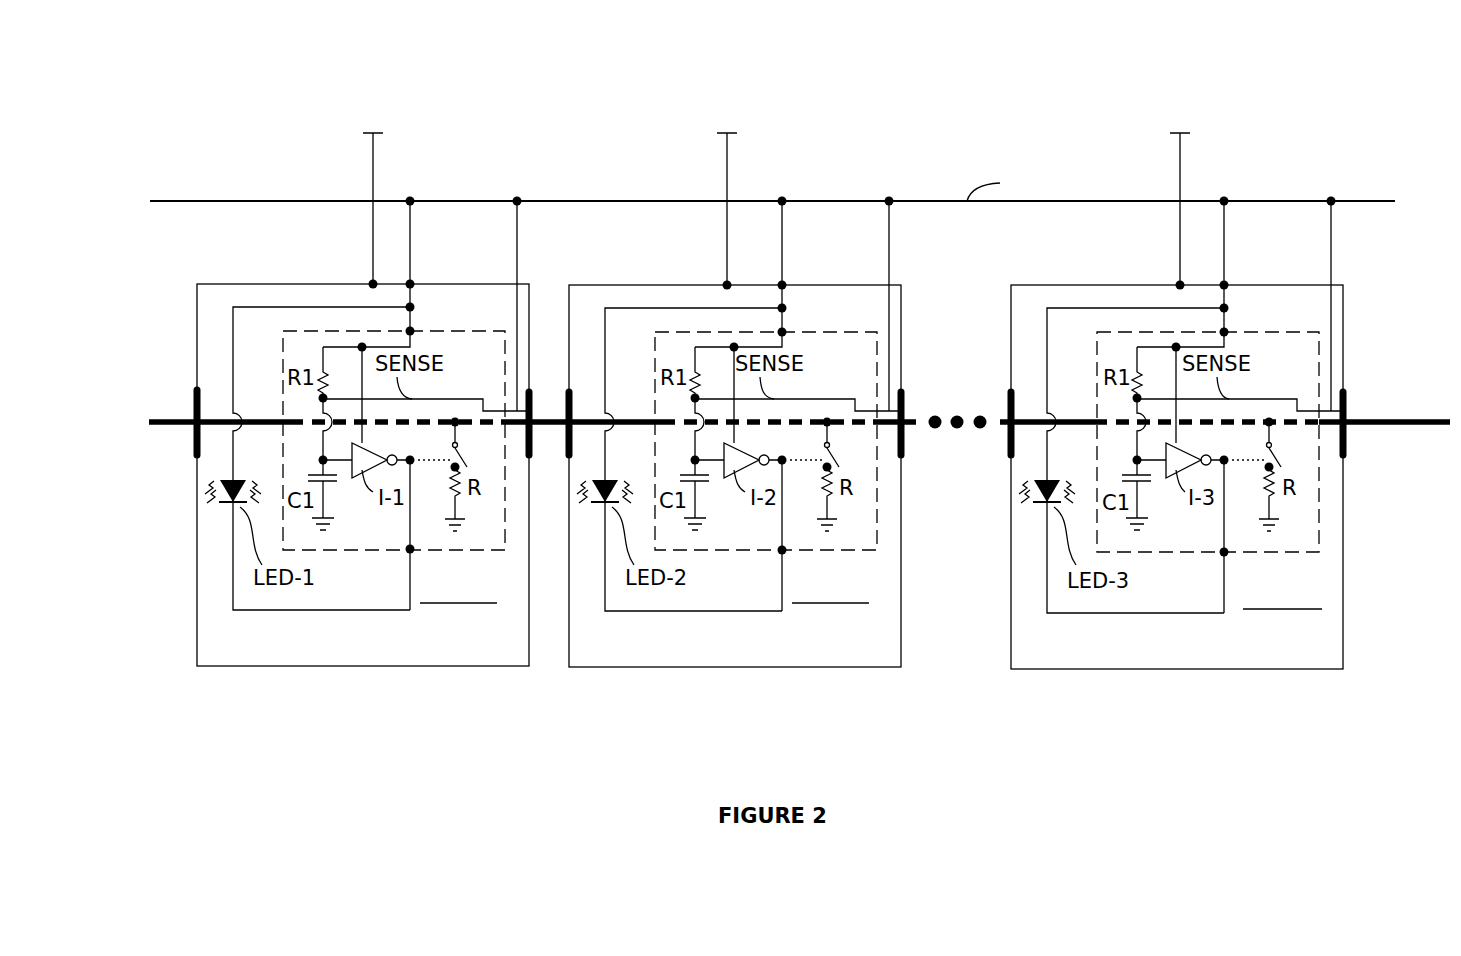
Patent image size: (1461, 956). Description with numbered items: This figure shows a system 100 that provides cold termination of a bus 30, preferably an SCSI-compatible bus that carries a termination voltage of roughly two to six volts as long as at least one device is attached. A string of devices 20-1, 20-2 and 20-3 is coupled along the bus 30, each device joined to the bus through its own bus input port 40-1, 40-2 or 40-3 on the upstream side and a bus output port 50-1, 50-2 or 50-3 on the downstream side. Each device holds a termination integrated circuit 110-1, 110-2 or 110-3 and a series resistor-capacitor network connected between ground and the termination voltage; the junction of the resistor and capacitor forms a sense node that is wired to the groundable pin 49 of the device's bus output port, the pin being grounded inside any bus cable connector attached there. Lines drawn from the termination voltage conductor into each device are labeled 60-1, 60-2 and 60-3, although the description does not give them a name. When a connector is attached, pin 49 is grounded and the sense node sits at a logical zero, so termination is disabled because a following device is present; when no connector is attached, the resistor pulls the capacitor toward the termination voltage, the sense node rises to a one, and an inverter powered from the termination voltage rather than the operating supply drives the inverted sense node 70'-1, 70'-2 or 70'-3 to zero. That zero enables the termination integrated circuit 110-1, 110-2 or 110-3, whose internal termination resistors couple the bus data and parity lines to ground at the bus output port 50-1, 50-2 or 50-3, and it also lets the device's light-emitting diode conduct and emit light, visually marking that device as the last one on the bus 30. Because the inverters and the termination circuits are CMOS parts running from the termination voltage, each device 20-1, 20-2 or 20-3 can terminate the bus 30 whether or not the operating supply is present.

The system 100 is at (190, 100).
The bus 30 is at (1377, 420).
The device 20-1 is at (260, 281).
The device 20-2 is at (610, 282).
The device 20-3 is at (1062, 282).
The bus input port 40-1 is at (191, 412).
The bus input port 40-2 is at (563, 408).
The bus input port 40-3 is at (1004, 416).
The bus output port 50-1 is at (532, 456).
The bus output port 50-2 is at (905, 438).
The bus output port 50-3 is at (1345, 434).
The pull-up line of first module 60-1 is at (417, 282).
The pull-up line of second module 60-2 is at (788, 282).
The pull-up line of third module 60-3 is at (1232, 282).
The termination integrated circuit 110-1 is at (430, 331).
The termination integrated circuit 110-2 is at (805, 330).
The termination integrated circuit 110-3 is at (1245, 332).
The groundable pin 49 is at (483, 399).
The inverted SENSE node 70'-1 is at (452, 547).
The inverted SENSE node 70'-2 is at (824, 547).
The inverted SENSE node 70'-3 is at (1271, 550).